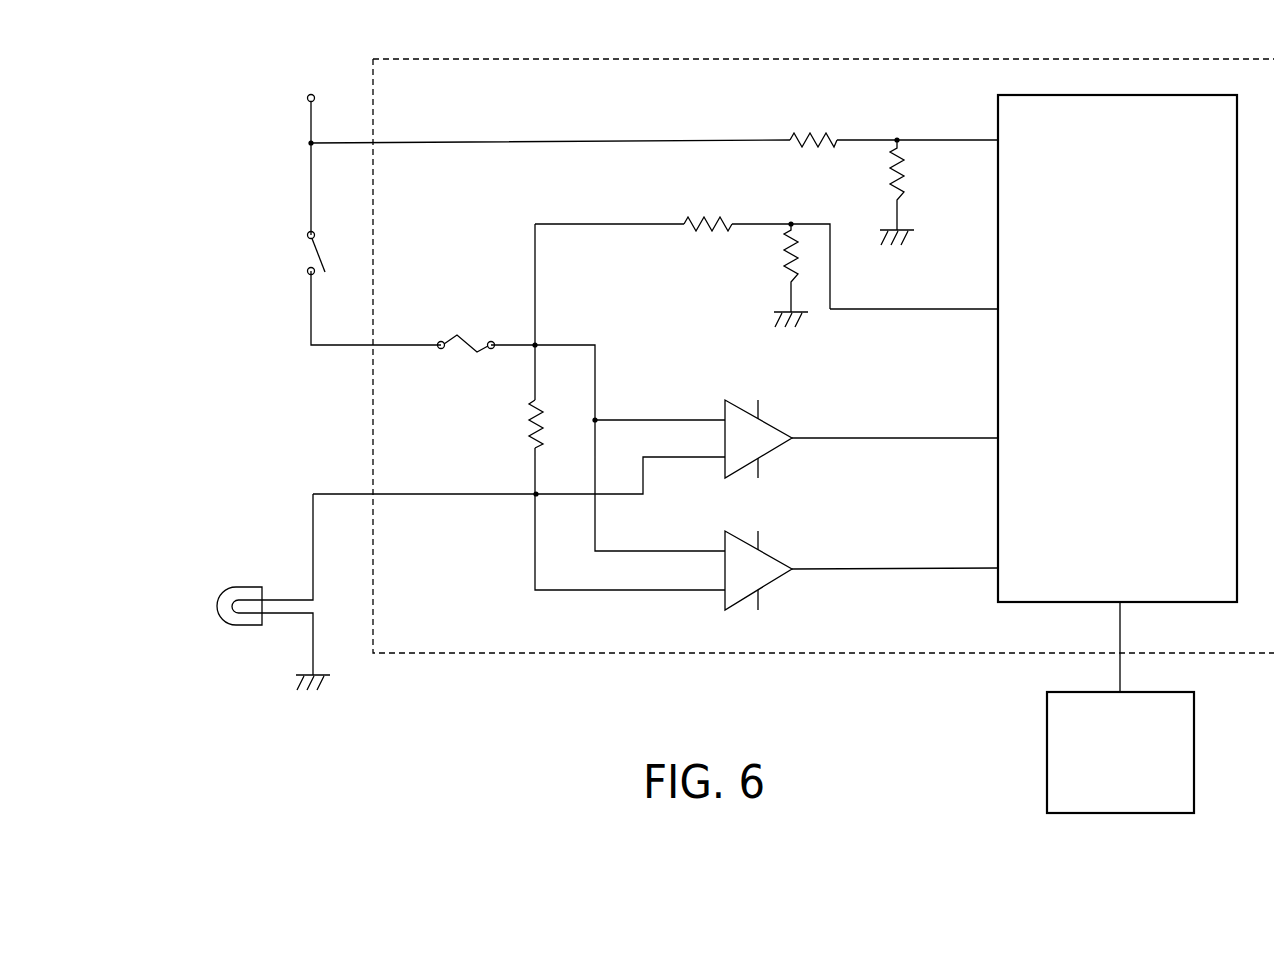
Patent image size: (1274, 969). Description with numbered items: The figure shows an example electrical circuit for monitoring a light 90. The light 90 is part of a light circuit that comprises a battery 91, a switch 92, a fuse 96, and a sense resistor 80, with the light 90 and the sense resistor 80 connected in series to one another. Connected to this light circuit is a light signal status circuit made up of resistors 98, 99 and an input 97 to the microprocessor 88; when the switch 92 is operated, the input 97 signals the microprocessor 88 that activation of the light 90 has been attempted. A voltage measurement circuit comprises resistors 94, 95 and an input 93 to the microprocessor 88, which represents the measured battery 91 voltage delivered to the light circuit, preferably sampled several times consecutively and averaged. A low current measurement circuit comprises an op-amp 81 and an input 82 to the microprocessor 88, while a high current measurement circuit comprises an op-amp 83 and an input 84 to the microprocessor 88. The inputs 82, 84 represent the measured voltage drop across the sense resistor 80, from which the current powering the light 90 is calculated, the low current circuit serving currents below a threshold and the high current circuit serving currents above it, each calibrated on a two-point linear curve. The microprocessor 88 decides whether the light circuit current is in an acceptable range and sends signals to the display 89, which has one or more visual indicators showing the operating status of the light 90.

The sense resistor 80 is at (503, 430).
The op-amp 81 is at (775, 418).
The input 82 is at (989, 426).
The op-amp 83 is at (745, 606).
The input 84 is at (988, 582).
The microprocessor 88 is at (1105, 495).
The display 89 is at (1105, 738).
The light 90 is at (208, 607).
The battery 91 is at (307, 98).
The switch 92 is at (299, 258).
The input 93 is at (988, 108).
The resistor 94 is at (812, 108).
The resistor 95 is at (868, 186).
The fuse 96 is at (459, 323).
The input 97 is at (988, 298).
The resistor 98 is at (678, 211).
The resistor 99 is at (743, 275).